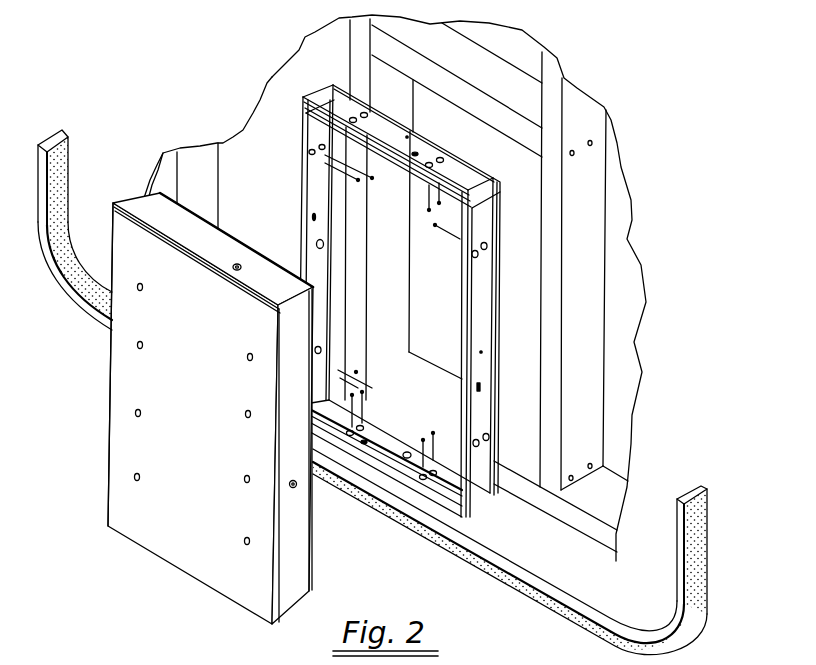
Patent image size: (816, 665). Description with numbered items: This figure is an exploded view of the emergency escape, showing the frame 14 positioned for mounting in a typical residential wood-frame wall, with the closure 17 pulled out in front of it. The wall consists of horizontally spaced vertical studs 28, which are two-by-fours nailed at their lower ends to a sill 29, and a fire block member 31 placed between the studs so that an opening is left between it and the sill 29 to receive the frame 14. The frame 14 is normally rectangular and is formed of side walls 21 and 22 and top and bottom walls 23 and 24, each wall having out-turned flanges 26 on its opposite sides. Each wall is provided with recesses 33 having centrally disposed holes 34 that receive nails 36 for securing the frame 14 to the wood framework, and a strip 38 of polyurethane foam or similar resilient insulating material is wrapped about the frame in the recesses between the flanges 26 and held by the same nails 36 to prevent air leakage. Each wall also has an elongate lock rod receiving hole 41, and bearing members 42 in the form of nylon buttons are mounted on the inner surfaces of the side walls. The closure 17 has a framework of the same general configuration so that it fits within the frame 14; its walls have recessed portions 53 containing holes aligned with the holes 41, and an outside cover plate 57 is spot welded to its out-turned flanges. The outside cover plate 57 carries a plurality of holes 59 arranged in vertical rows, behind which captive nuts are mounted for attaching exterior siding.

The frame 14 is at (392, 311).
The closure 17 is at (213, 408).
The side wall 21 is at (308, 197).
The side wall 22 is at (485, 266).
The top wall 23 is at (392, 148).
The bottom wall 24 is at (378, 453).
The out-turned flanges 26 is at (469, 332).
The studs 28 is at (382, 75).
The sill 29 is at (523, 488).
The fire block member 31 is at (548, 62).
The recesses 33 is at (428, 482).
The holes 34 is at (490, 440).
The nails 36 is at (362, 386).
The strip 38 is at (482, 551).
The lock rod receiving hole 41 is at (416, 152).
The bearing members 42 is at (316, 246).
The recessed portions 53 is at (297, 484).
The outside cover plate 57 is at (110, 446).
The holes 59 is at (140, 416).